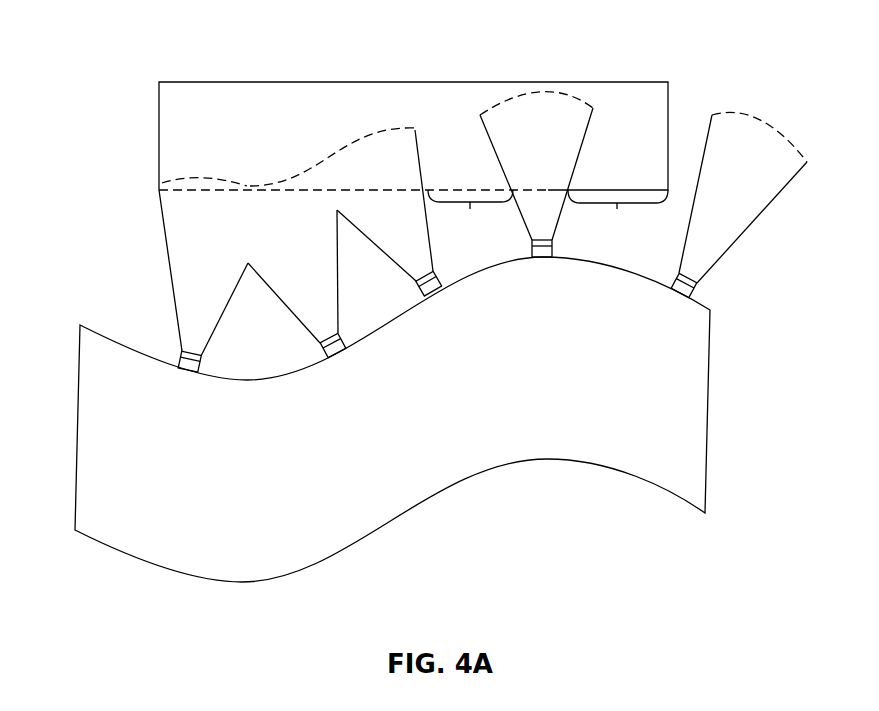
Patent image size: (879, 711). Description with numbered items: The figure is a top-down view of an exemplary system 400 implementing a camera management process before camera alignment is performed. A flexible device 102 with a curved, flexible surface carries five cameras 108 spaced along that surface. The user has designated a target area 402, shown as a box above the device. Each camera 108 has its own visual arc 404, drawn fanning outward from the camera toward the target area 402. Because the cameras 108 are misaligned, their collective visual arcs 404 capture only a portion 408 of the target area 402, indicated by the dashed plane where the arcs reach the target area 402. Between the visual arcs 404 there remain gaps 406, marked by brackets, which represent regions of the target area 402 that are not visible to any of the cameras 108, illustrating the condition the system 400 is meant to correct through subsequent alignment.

The system 400 is at (128, 55).
The target area 402 is at (159, 138).
The visual arcs 404 is at (555, 92).
The gaps 406 is at (548, 212).
The portion 408 is at (275, 191).
The cameras 108 is at (327, 347).
The flexible device 102 is at (492, 465).